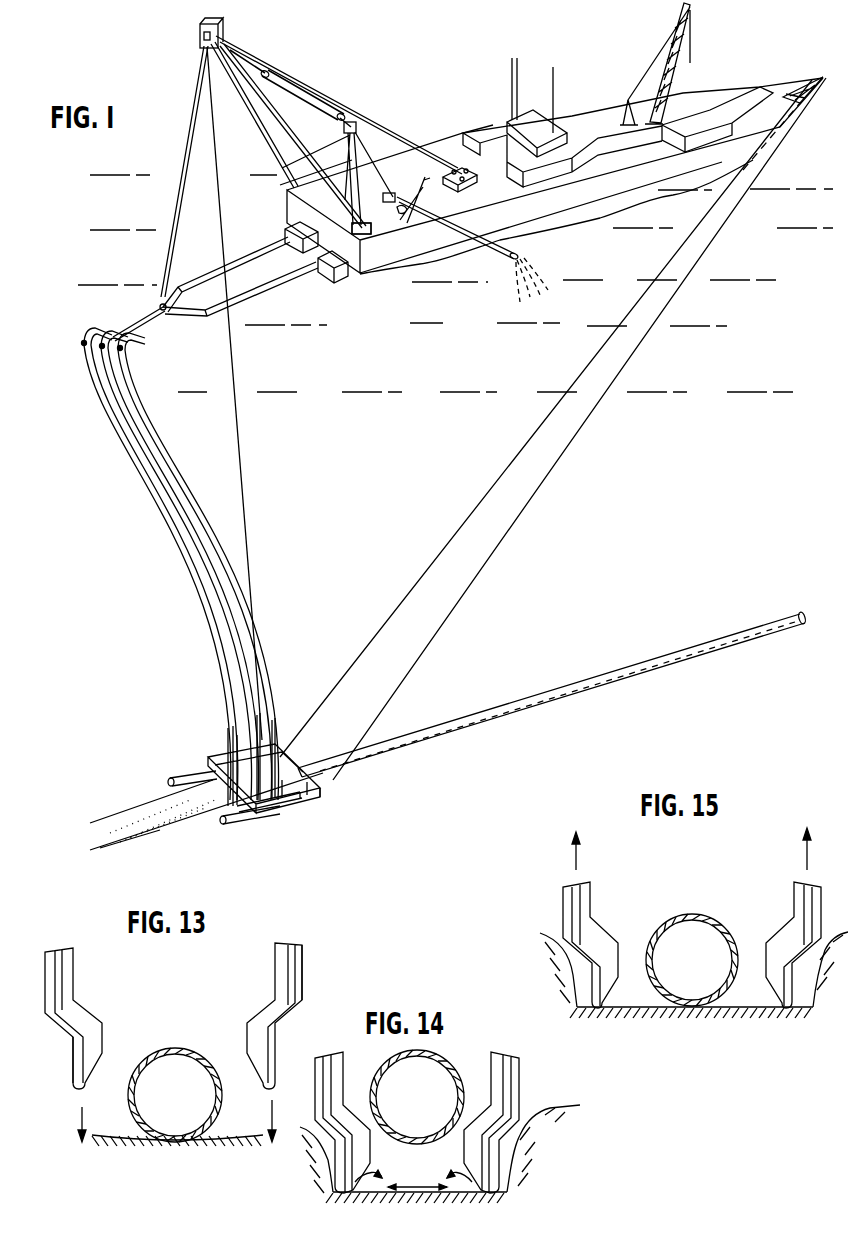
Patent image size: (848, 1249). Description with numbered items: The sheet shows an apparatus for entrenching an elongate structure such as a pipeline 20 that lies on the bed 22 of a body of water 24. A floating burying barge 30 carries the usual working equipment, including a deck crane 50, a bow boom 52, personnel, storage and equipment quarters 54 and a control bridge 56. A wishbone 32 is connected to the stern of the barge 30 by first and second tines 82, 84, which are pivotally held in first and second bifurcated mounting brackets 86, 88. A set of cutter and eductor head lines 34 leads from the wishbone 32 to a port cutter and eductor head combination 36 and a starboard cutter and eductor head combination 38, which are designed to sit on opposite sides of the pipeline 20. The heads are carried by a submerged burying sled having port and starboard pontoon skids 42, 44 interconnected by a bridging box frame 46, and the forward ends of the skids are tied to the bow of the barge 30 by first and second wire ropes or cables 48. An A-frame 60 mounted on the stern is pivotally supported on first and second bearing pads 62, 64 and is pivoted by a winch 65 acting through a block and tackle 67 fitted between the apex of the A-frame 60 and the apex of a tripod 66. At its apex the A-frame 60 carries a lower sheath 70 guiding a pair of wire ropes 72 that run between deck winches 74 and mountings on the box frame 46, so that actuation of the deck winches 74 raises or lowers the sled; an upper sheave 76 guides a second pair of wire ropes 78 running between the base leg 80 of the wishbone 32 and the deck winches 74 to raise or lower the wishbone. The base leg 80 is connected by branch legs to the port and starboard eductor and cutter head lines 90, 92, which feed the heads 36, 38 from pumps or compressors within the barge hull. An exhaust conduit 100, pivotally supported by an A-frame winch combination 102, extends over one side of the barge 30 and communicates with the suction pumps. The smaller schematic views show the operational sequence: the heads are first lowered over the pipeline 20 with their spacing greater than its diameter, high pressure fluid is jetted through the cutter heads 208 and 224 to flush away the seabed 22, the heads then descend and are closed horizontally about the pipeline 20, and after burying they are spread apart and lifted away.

In FIG. 1, the pipeline 20 is at (538, 691).
In FIG. 13, the pipeline 20 is at (195, 1038).
In FIG. 14, the pipeline 20 is at (457, 1072).
In FIG. 15, the pipeline 20 is at (693, 908).
In FIG. 1, the bed of body of water 22 is at (552, 763).
In FIG. 13, the bed of body of water 22 is at (192, 1171).
In FIG. 14, the bed of body of water 22 is at (545, 1205).
In FIG. 15, the bed of body of water 22 is at (696, 1047).
In FIG. 1, the body of water 24 is at (610, 564).
In FIG. 1, the burying barge 30 is at (432, 75).
In FIG. 1, the wishbone 32 is at (241, 305).
In FIG. 1, the cutter and eductor head lines 34 is at (180, 564).
In FIG. 1, the port cutter and eductor head combination 36 is at (229, 747).
In FIG. 13, the port cutter and eductor head combination 36 is at (262, 1003).
In FIG. 14, the port cutter and eductor head combination 36 is at (483, 1075).
In FIG. 15, the port cutter and eductor head combination 36 is at (792, 880).
In FIG. 1, the starboard cutter and eductor head combination 38 is at (283, 767).
In FIG. 13, the starboard cutter and eductor head combination 38 is at (88, 1003).
In FIG. 14, the starboard cutter and eductor head combination 38 is at (348, 1082).
In FIG. 15, the starboard cutter and eductor head combination 38 is at (597, 914).
In FIG. 1, the port pontoon skid 42 is at (175, 782).
In FIG. 1, the starboard pontoon skid 44 is at (228, 822).
In FIG. 1, the bridging box frame 46 is at (270, 800).
In FIG. 1, the wire rope or cable 48 is at (456, 588).
In FIG. 1, the deck crane 50 is at (686, 16).
In FIG. 1, the bow boom 52 is at (812, 84).
In FIG. 1, the personnel, storage and equipment quarters 54 is at (602, 112).
In FIG. 1, the control bridge 56 is at (532, 114).
In FIG. 1, the A-frame 60 is at (228, 93).
In FIG. 1, the first bearing pad 62 is at (298, 188).
In FIG. 1, the second bearing pad 64 is at (362, 232).
In FIG. 1, the winch 65 is at (346, 200).
In FIG. 1, the tripod 66 is at (367, 147).
In FIG. 1, the block and tackle 67 is at (330, 76).
In FIG. 1, the lower sheath 70 is at (218, 38).
In FIG. 1, the pair of wire ropes 72 is at (236, 437).
In FIG. 1, the deck winches 74 is at (468, 190).
In FIG. 1, the upper sheave 76 is at (203, 34).
In FIG. 1, the second pair of wire ropes 78 is at (185, 185).
In FIG. 1, the base leg of wishbone 80 is at (158, 307).
In FIG. 1, the first tine 82 is at (256, 253).
In FIG. 1, the second tine 84 is at (262, 282).
In FIG. 1, the first bifurcated mounting bracket 86 is at (294, 234).
In FIG. 1, the second bifurcated mounting bracket 88 is at (332, 268).
In FIG. 1, the port eductor and cutter head line 90 is at (196, 546).
In FIG. 1, the starboard eductor and cutter head line 92 is at (200, 588).
In FIG. 1, the exhaust conduit 100 is at (496, 252).
In FIG. 1, the A-frame winch combination 102 is at (426, 182).
In FIG. 13, the cutter head 208 is at (304, 962).
In FIG. 13, the cutter head 224 is at (76, 1060).